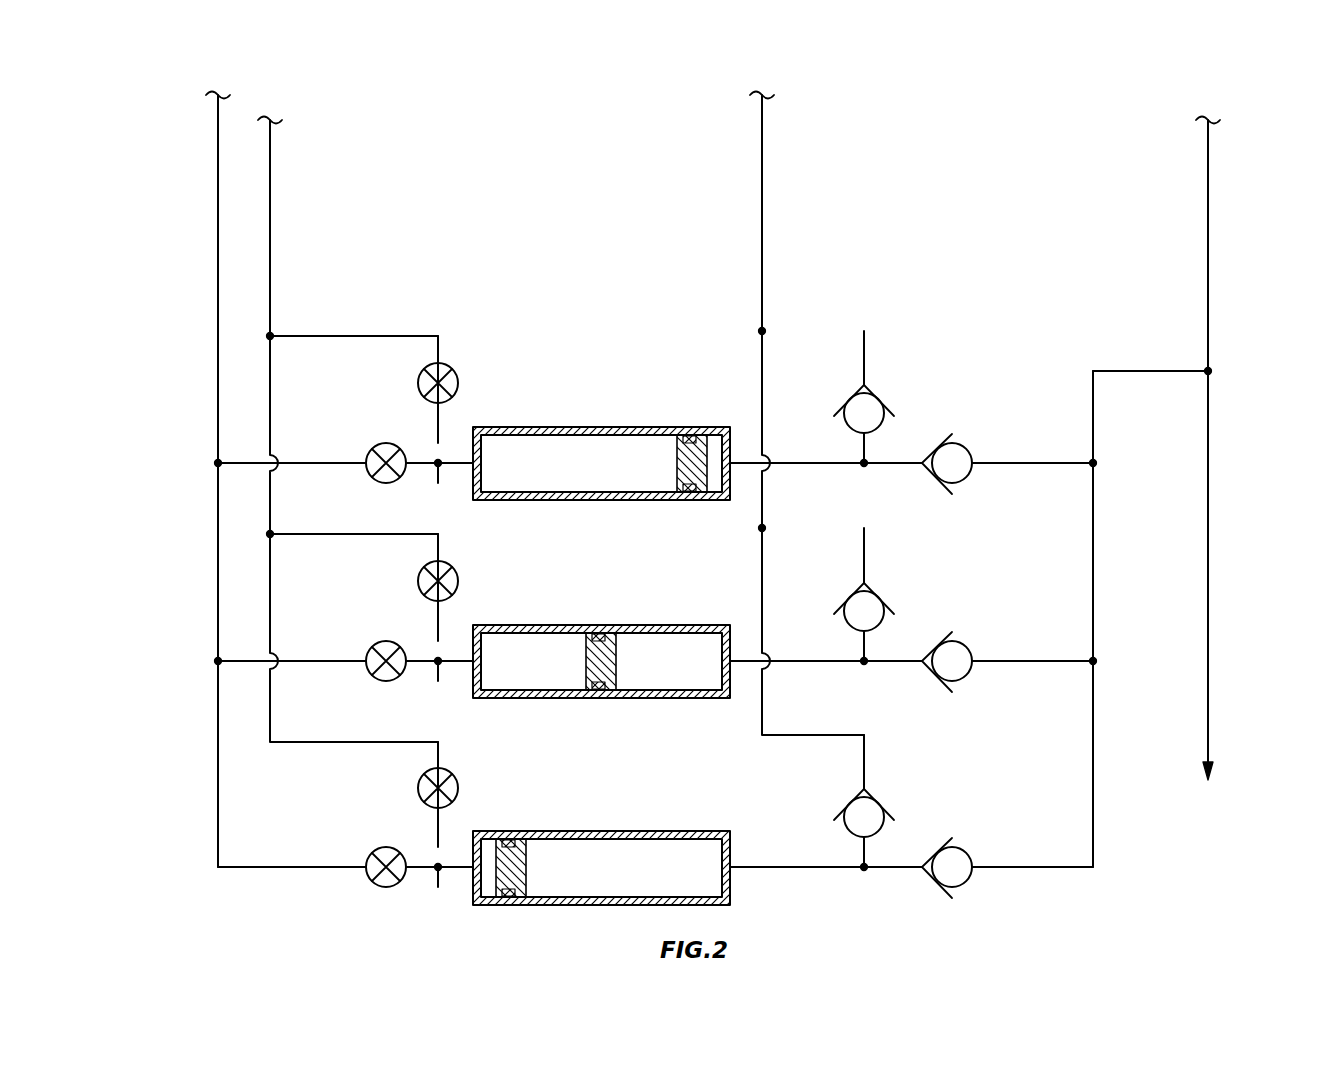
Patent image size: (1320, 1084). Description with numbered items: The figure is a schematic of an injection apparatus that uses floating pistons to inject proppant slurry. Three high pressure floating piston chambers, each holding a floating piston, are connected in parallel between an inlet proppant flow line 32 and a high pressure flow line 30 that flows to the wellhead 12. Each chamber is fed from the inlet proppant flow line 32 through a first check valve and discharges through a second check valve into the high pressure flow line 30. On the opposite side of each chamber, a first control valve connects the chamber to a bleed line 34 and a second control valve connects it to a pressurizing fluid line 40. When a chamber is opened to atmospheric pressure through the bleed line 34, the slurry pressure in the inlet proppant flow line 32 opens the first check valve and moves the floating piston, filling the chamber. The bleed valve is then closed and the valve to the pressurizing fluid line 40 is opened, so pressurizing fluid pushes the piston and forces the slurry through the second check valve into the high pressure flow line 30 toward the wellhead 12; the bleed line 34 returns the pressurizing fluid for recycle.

The wellhead 12 is at (1208, 787).
The high pressure flow line 30 is at (1208, 232).
The inlet proppant flow line 32 is at (762, 197).
The bleed line 34 is at (218, 145).
The pressurizing fluid line 40 is at (270, 218).